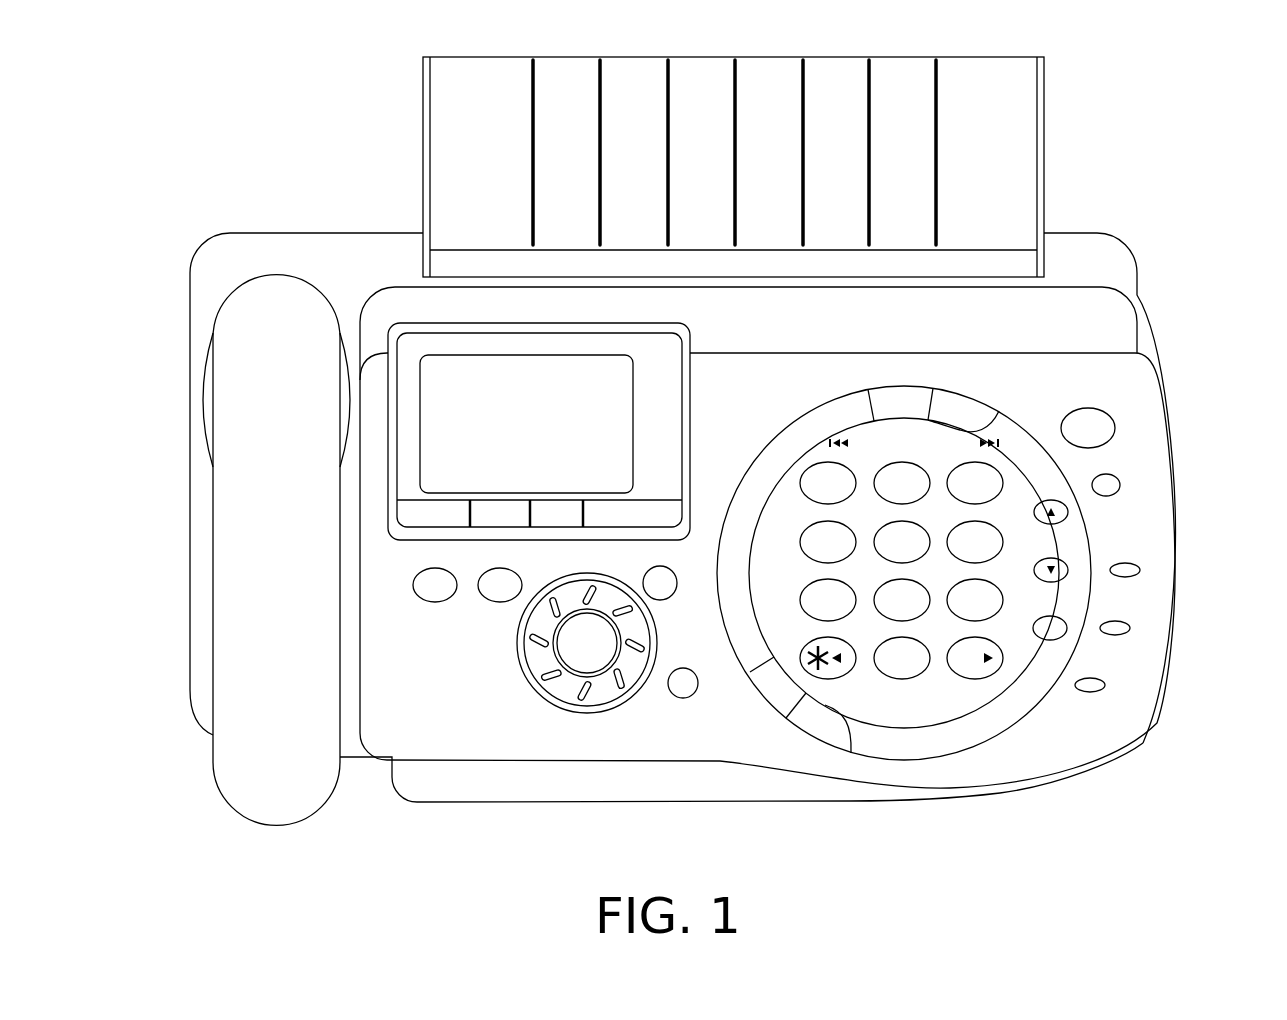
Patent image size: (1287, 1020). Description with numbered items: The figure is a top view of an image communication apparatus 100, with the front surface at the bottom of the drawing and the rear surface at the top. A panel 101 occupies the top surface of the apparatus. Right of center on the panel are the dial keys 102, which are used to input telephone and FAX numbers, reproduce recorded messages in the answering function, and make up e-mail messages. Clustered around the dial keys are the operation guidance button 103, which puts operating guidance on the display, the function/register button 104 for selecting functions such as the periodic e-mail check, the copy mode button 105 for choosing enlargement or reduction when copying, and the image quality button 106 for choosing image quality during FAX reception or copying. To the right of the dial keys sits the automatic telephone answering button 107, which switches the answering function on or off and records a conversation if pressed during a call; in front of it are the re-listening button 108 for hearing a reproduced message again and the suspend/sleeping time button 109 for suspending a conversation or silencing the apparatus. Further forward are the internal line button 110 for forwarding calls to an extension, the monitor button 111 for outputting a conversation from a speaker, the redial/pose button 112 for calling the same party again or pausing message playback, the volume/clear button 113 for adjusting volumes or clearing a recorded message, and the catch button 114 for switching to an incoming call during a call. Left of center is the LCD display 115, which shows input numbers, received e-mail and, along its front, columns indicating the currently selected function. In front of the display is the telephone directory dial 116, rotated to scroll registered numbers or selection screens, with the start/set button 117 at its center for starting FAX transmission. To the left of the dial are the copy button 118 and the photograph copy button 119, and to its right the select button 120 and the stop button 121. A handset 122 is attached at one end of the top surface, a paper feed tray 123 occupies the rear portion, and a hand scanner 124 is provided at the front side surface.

The image communication apparatus 100 is at (294, 137).
The panel 101 is at (1173, 538).
The dial keys 102 is at (977, 680).
The operation guidance button 103 is at (965, 400).
The function/register button 104 is at (902, 383).
The copy mode button 105 is at (785, 717).
The image quality button 106 is at (838, 740).
The automatic telephone answering button 107 is at (1115, 428).
The re-listening button 108 is at (1120, 485).
The suspend/sleeping time button 109 is at (1068, 512).
The internal line button 110 is at (1068, 570).
The monitor button 111 is at (1067, 628).
The redial/pose button 112 is at (1140, 568).
The volume/clear button 113 is at (1130, 628).
The catch button 114 is at (1105, 685).
The display 115 is at (553, 380).
The telephone directory dial 116 is at (602, 697).
The start/set button 117 is at (565, 658).
The copy button 118 is at (412, 597).
The photograph copy button 119 is at (473, 592).
The select button 120 is at (657, 600).
The stop button 121 is at (692, 697).
The handset 122 is at (227, 757).
The paper feed tray 123 is at (1017, 125).
The hand scanner 124 is at (553, 783).